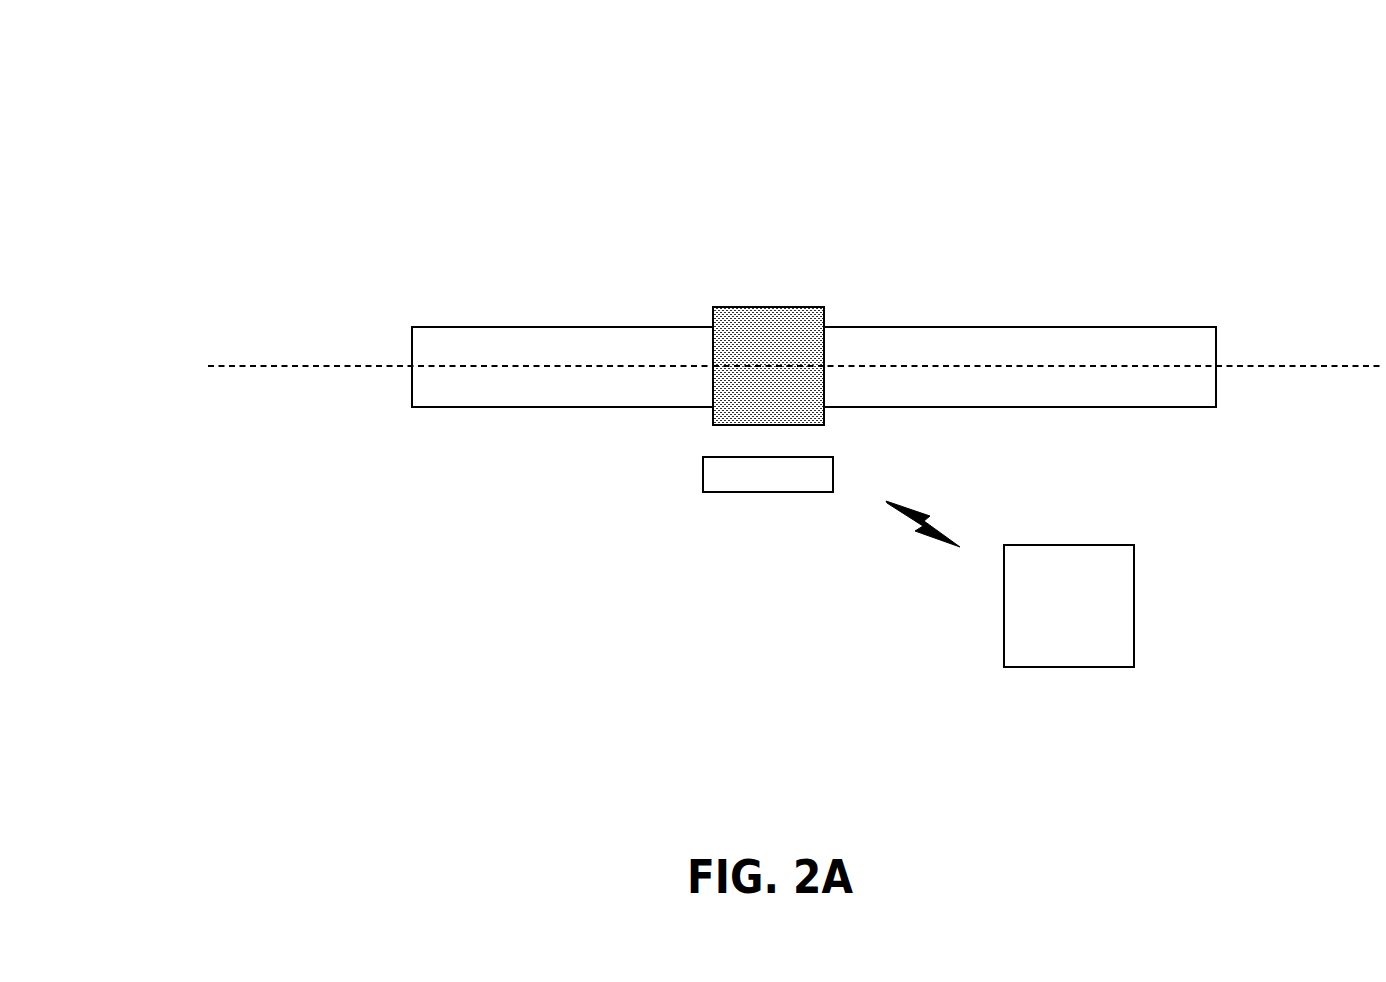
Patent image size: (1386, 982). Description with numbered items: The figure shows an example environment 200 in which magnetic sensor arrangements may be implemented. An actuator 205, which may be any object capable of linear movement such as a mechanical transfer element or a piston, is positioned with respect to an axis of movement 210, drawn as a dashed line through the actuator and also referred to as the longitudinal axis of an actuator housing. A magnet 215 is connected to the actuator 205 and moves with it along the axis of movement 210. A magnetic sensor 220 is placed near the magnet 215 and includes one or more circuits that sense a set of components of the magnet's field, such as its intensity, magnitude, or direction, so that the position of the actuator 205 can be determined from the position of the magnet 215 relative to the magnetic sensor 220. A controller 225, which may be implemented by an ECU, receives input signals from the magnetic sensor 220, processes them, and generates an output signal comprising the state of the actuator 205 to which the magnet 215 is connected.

The environment 200 is at (264, 45).
The actuator 205 is at (1121, 327).
The axis of movement 210 is at (243, 365).
The magnet 215 is at (757, 307).
The magnetic sensor 220 is at (765, 492).
The controller 225 is at (1049, 632).